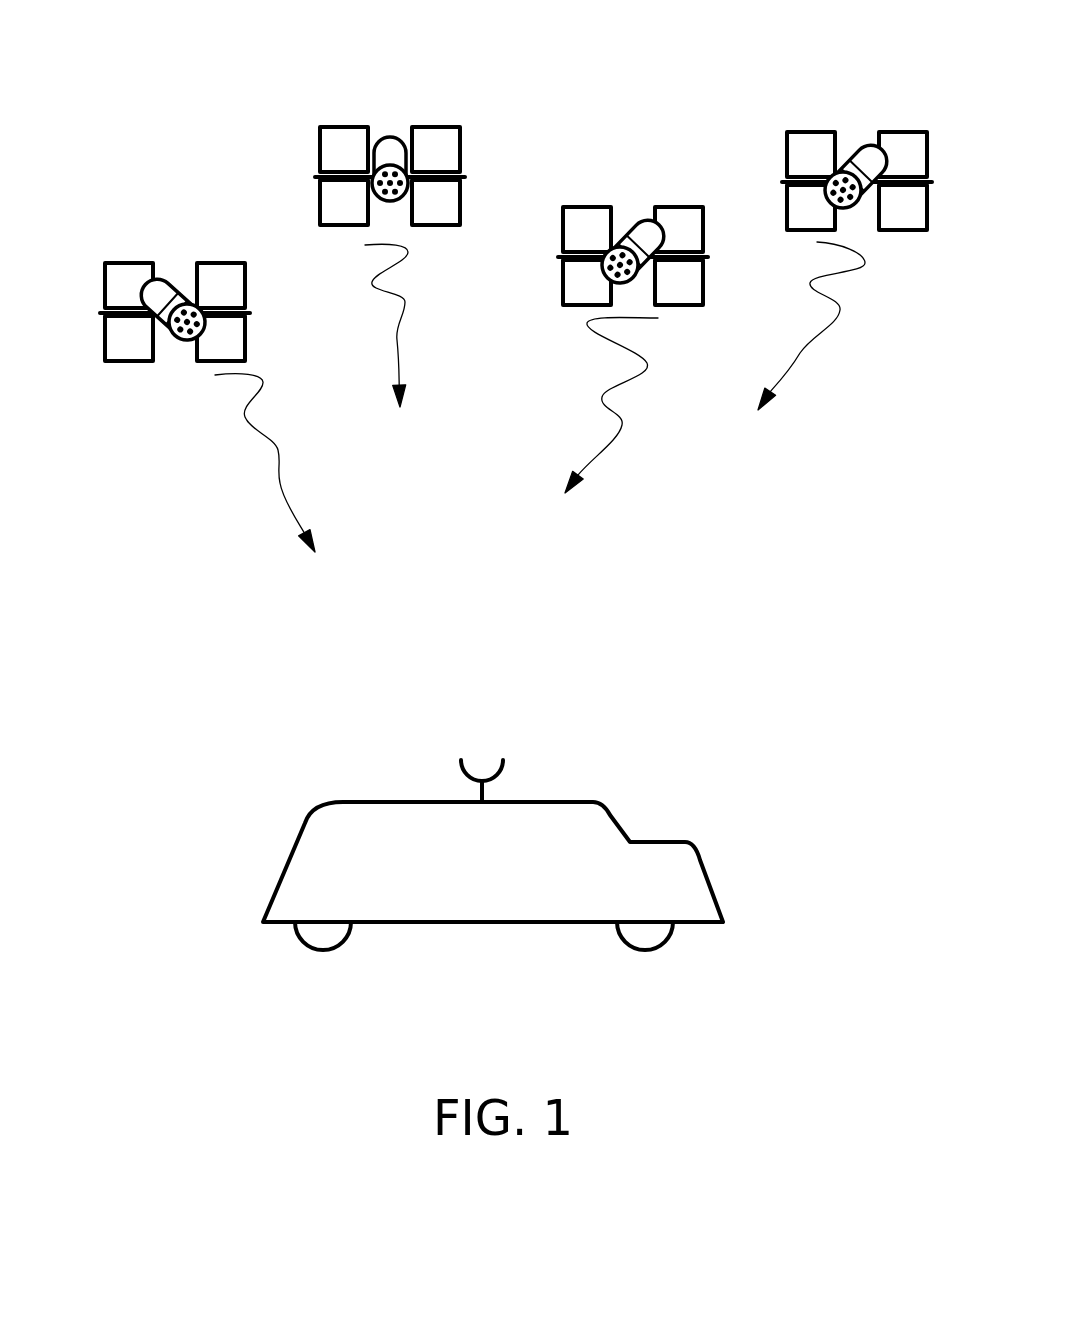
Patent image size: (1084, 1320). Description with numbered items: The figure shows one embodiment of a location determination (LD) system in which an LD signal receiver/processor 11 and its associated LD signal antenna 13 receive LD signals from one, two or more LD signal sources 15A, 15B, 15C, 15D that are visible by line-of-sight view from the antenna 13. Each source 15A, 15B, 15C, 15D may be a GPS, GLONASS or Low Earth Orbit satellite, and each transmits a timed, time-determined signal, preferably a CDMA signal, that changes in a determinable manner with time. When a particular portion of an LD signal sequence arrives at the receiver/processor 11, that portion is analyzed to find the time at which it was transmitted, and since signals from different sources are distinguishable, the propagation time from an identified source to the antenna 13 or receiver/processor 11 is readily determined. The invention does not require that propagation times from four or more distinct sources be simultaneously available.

The LD signal receiver/processor 11 is at (650, 868).
The LD signal antenna 13 is at (483, 792).
The LD signal source 15A is at (168, 290).
The LD signal source 15B is at (388, 135).
The LD signal source 15C is at (633, 235).
The LD signal source 15D is at (858, 158).